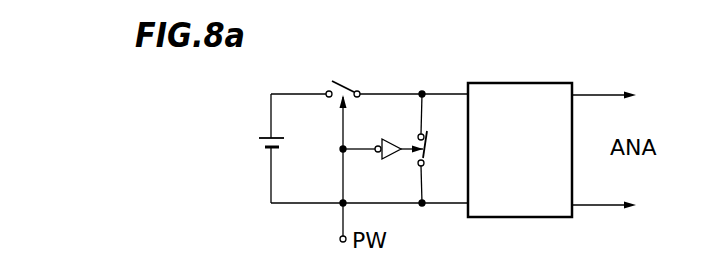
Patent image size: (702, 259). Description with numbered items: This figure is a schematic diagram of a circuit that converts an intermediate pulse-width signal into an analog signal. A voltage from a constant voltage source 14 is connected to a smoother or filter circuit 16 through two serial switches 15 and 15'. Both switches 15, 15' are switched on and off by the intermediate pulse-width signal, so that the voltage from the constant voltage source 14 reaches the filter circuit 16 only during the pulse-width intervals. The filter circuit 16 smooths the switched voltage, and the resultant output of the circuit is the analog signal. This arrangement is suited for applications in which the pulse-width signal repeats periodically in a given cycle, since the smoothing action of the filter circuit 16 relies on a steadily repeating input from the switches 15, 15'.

The constant voltage source 14 is at (268, 148).
The switch 15 is at (354, 72).
The switch 15' is at (444, 148).
The filter circuit 16 is at (510, 83).